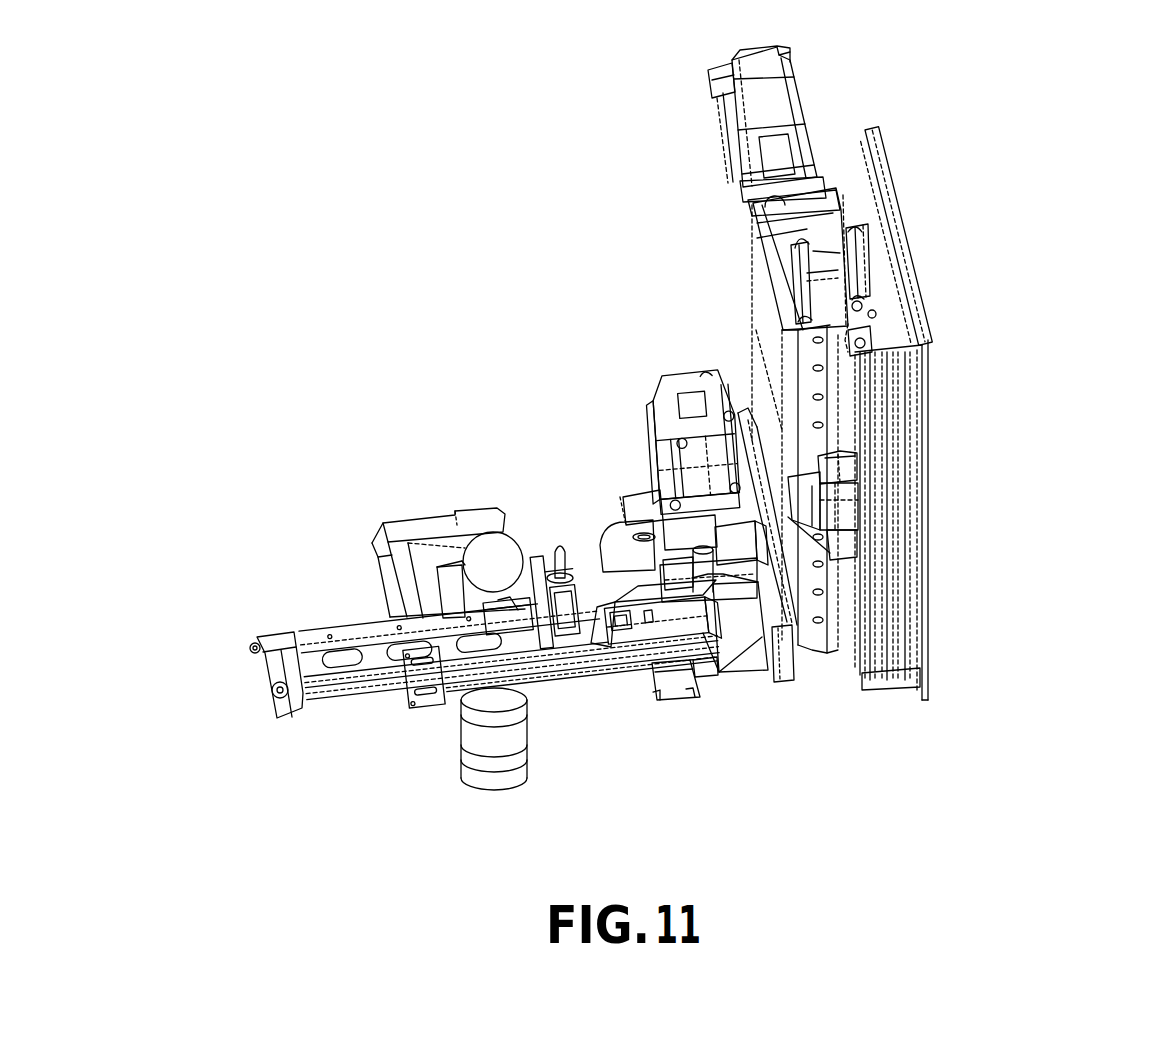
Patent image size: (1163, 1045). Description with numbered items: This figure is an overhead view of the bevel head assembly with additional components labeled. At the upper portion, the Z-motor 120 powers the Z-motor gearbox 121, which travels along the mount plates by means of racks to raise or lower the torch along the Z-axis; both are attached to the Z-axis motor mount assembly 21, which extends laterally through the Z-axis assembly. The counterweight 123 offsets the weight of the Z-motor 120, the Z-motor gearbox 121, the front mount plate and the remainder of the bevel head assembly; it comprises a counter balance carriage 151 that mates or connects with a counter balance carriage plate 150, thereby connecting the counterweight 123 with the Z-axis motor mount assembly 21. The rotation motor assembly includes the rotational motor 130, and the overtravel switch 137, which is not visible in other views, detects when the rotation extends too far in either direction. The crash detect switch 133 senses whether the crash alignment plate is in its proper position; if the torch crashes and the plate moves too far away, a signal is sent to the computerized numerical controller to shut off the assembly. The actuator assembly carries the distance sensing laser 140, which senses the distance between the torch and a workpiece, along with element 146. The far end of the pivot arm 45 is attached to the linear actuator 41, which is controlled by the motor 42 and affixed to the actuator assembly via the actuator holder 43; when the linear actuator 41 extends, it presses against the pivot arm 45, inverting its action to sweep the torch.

The Z-motor 120 is at (760, 108).
The Z-motor gearbox 121 is at (814, 220).
The Z-axis motor mount assembly 21 is at (846, 529).
The counterweight 123 is at (898, 497).
The counter balance carriage 151 is at (853, 464).
The counter balance carriage plate 150 is at (838, 504).
The overtravel switch 137 is at (778, 621).
The rotational motor 130 is at (686, 384).
The crash detect switch 133 is at (643, 503).
The distance sensing laser 140 is at (556, 556).
The pin 146 is at (620, 522).
The pivot arm 45 is at (345, 635).
The linear actuator 41 is at (463, 708).
The motor 42 is at (666, 623).
The actuator holder 43 is at (679, 686).